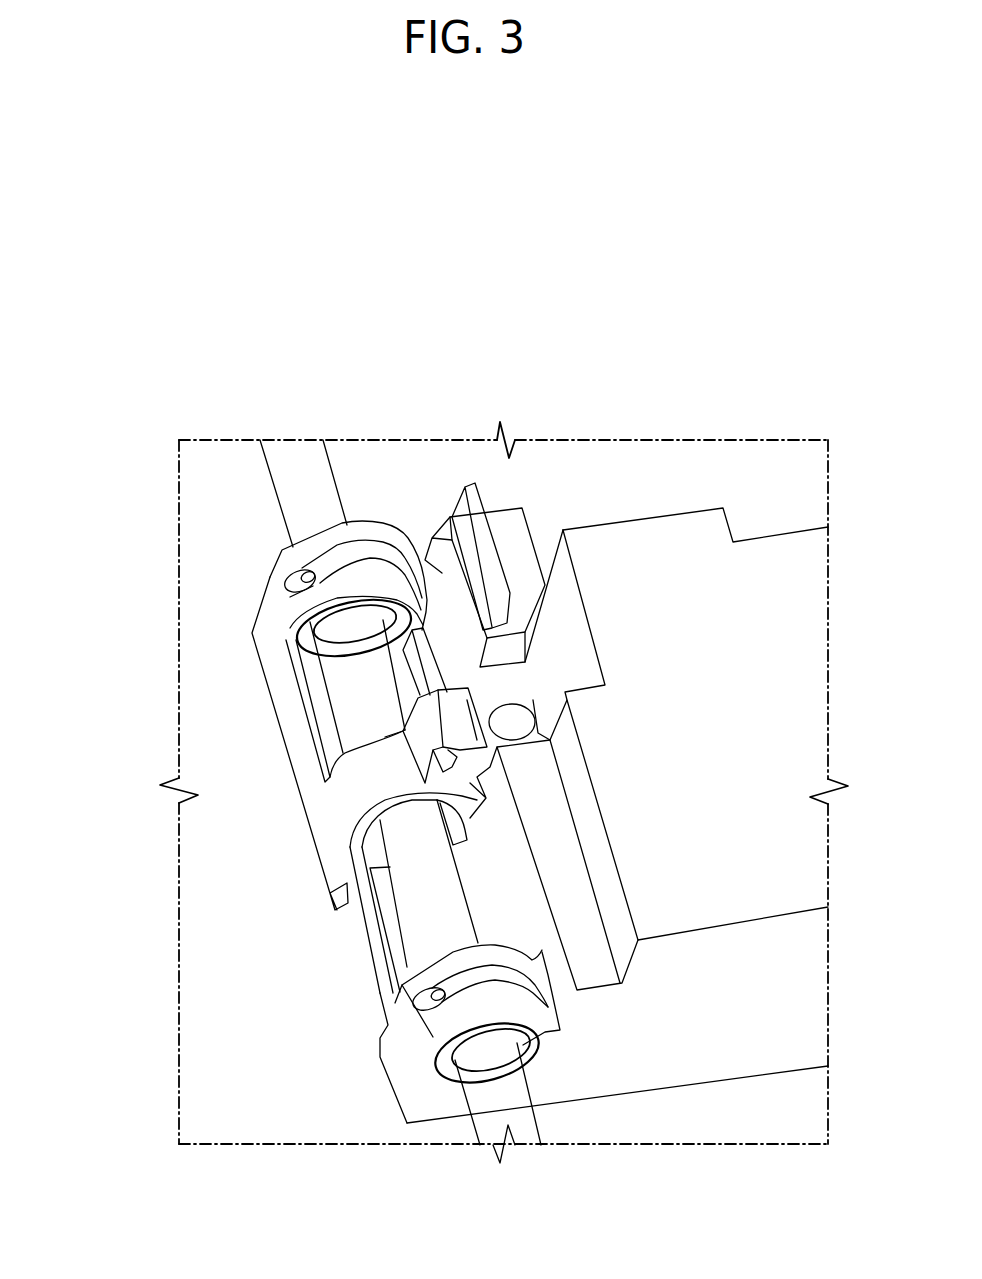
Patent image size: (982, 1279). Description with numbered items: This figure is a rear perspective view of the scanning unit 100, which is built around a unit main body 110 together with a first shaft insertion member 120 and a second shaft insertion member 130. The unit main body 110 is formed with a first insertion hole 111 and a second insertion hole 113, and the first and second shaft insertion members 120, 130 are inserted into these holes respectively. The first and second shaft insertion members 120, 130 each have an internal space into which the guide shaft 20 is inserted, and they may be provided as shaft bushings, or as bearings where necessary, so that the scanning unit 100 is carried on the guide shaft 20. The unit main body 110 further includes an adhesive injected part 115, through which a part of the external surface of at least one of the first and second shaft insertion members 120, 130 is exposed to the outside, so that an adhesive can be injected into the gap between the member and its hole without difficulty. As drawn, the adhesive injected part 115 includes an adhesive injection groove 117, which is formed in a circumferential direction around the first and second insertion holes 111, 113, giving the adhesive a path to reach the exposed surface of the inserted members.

The guide shaft 20 is at (287, 460).
The scanning unit 100 is at (645, 503).
The unit main body 110 is at (398, 1067).
The first insertion hole 111 is at (452, 1082).
The second insertion hole 113 is at (298, 633).
The adhesive injected part 115 is at (293, 590).
The adhesive injection groove 117 is at (307, 570).
The first shaft insertion member 120 is at (535, 1082).
The second shaft insertion member 130 is at (300, 649).